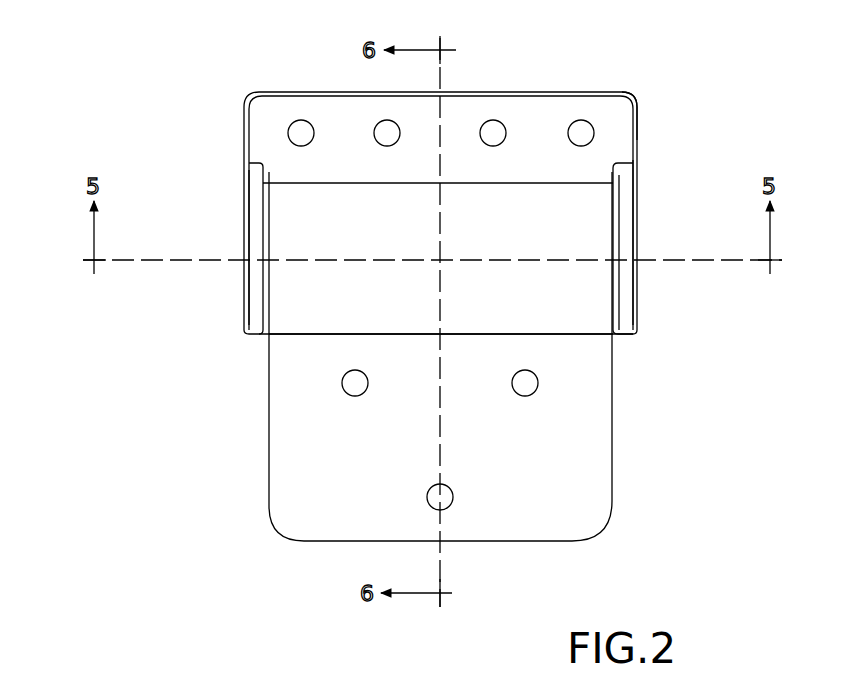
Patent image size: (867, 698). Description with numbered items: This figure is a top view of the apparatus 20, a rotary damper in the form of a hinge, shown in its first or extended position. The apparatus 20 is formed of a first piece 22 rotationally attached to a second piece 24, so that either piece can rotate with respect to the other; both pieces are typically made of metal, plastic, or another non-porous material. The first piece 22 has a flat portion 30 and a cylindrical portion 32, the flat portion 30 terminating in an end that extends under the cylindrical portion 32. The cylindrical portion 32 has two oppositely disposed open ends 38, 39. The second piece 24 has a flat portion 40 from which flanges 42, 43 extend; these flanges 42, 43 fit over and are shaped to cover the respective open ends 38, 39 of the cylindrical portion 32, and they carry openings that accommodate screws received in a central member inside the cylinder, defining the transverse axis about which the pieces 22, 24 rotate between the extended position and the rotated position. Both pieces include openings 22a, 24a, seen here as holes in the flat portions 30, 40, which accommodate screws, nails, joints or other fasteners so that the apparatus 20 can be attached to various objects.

The apparatus 20 is at (246, 83).
The first piece 22 is at (452, 242).
The openings 22a is at (433, 505).
The second piece 24 is at (440, 187).
The openings 24a is at (387, 120).
The flat portion 30 is at (467, 376).
The cylindrical portion 32 is at (585, 226).
The open end 38 is at (265, 225).
The open end 39 is at (618, 248).
The flat portion 40 is at (624, 107).
The flange 42 is at (257, 194).
The flange 43 is at (626, 199).